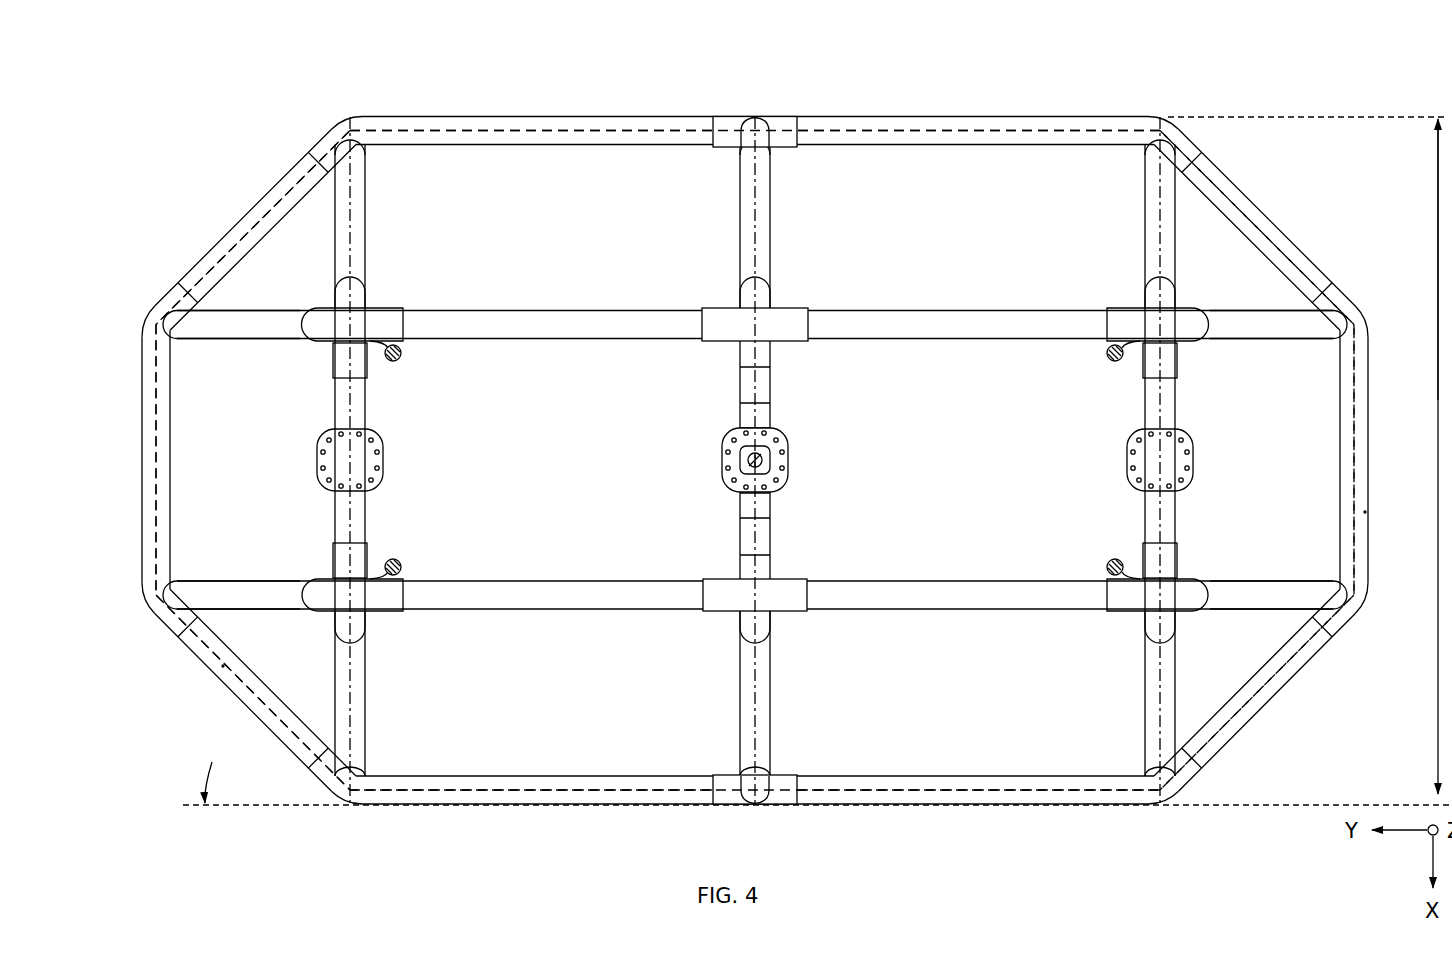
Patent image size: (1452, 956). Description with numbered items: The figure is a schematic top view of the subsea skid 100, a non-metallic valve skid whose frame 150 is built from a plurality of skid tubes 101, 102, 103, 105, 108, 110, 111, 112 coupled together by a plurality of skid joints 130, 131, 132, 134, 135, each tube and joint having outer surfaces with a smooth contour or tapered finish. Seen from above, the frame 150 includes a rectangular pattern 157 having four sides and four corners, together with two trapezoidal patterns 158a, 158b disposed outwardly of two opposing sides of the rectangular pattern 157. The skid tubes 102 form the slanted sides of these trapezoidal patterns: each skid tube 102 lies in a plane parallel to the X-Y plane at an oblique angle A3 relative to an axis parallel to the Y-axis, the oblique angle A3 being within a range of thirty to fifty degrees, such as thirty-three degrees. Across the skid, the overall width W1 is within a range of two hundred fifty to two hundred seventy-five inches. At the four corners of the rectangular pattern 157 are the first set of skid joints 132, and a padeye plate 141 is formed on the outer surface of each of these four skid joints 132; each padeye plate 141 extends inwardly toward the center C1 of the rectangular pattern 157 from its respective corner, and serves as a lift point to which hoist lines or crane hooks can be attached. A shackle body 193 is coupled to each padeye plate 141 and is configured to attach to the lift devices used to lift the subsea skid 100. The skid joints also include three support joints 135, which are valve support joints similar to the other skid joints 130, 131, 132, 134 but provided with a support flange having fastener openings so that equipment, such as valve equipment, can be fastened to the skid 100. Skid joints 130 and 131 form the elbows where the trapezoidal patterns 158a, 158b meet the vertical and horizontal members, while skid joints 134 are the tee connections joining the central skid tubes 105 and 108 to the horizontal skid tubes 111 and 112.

The subsea skid 100 is at (203, 76).
The skid tube 101 is at (148, 477).
The skid tube 102 is at (263, 210).
The skid tube 103 is at (235, 340).
The skid tube 105 is at (748, 385).
The skid tube 108 is at (361, 214).
The skid tube 110 is at (337, 417).
The skid tube 111 is at (514, 311).
The skid tube 112 is at (501, 114).
The skid joint 130 is at (141, 317).
The skid joint 131 is at (341, 112).
The skid joint 132 is at (380, 304).
The skid joint 134 is at (744, 112).
The support joint 135 is at (792, 456).
The padeye plate 141 is at (398, 364).
The frame 150 is at (600, 112).
The rectangular pattern 157 is at (548, 792).
The trapezoidal pattern 158a is at (222, 667).
The trapezoidal pattern 158b is at (1365, 512).
The shackle body 193 is at (404, 358).
The oblique angle A3 is at (817, 771).
The center C1 is at (724, 474).
The width W1 is at (1310, 455).